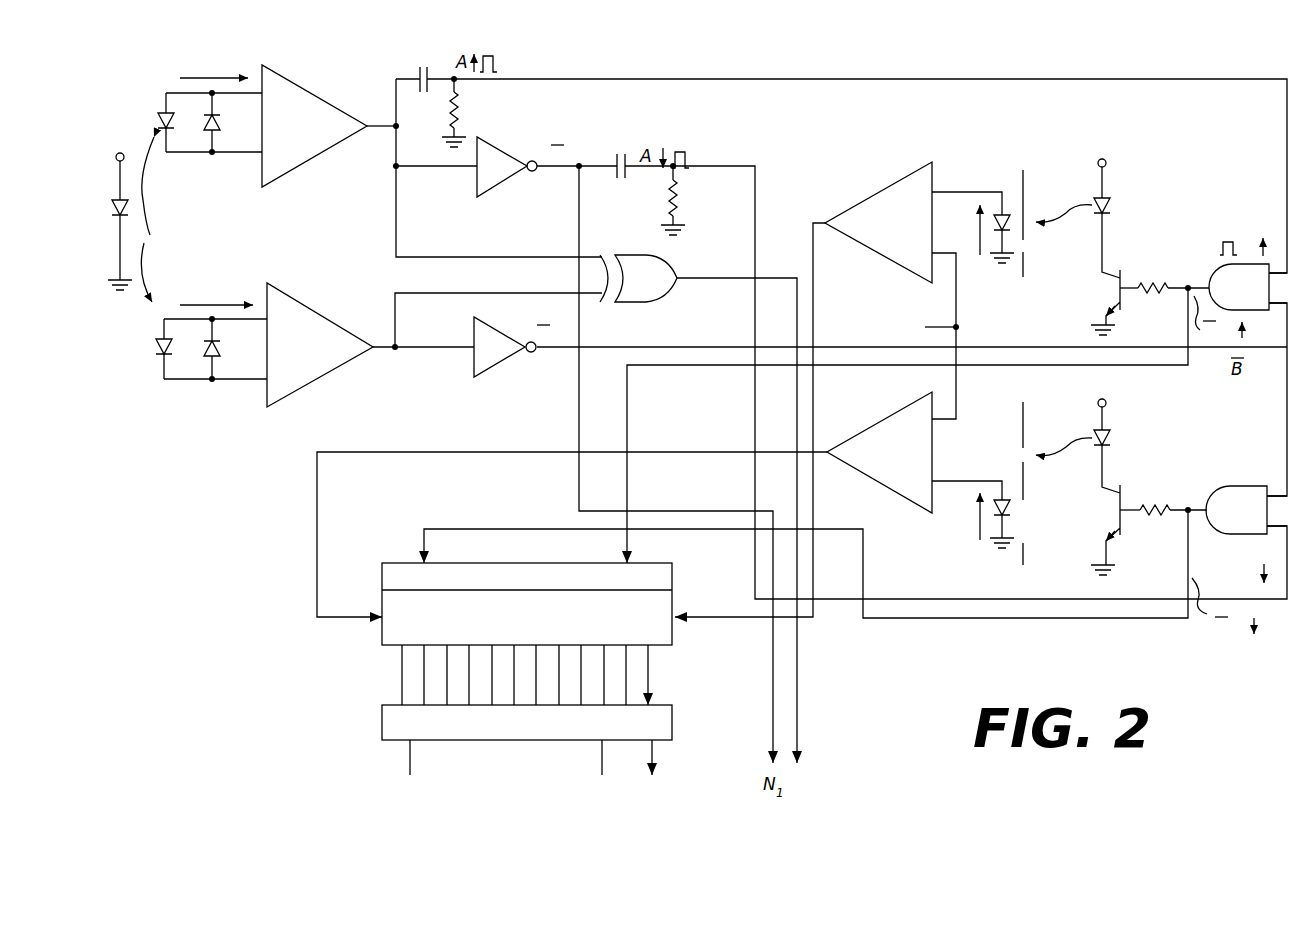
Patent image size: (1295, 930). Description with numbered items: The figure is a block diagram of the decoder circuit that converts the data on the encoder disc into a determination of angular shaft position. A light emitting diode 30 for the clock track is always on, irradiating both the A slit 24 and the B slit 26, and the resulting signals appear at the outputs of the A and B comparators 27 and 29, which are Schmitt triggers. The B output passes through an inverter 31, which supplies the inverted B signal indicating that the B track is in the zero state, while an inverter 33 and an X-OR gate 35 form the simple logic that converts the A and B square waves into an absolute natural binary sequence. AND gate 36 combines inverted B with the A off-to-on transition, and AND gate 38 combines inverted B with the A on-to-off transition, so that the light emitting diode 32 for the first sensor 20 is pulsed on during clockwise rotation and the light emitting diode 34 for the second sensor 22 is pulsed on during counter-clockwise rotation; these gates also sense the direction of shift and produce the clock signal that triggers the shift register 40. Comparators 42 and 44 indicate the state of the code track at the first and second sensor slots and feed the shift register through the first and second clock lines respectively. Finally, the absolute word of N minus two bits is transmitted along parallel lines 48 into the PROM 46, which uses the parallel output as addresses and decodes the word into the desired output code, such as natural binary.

The sensor S1 20 is at (1026, 162).
The sensor S2 22 is at (1024, 548).
The A slit 24 is at (152, 104).
The B slit 26 is at (152, 368).
The A comparator 27 is at (306, 123).
The B comparator 29 is at (309, 343).
The light emitting diode 30 is at (116, 200).
The inverter 31 is at (504, 356).
The LED for sensor S1 32 is at (1116, 190).
The inverter 33 is at (507, 175).
The LED for sensor S2 34 is at (1118, 426).
The X-OR gate 35 is at (654, 288).
The AND gate 36 is at (1252, 296).
The AND gate 38 is at (1251, 519).
The shift register 40 is at (672, 630).
The comparator 42 is at (891, 223).
The comparator 44 is at (891, 453).
The PROM 46 is at (472, 740).
The parallel lines 48 is at (388, 665).